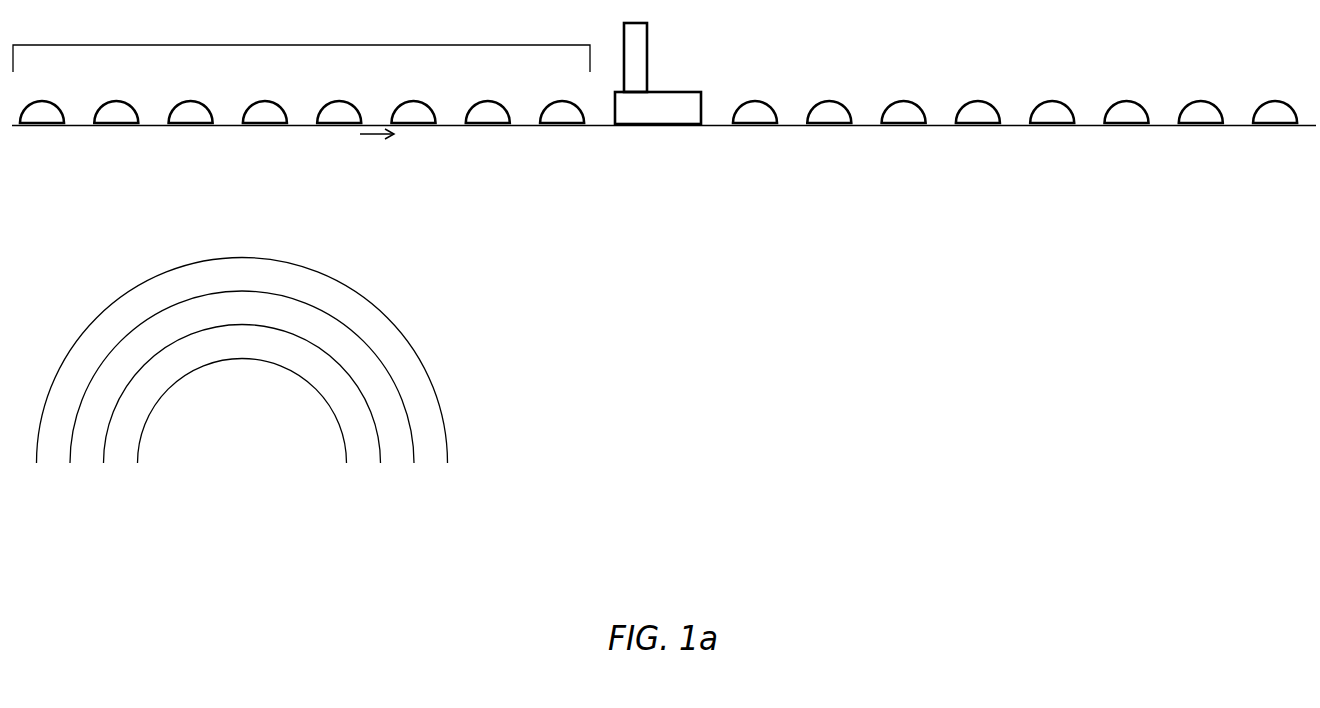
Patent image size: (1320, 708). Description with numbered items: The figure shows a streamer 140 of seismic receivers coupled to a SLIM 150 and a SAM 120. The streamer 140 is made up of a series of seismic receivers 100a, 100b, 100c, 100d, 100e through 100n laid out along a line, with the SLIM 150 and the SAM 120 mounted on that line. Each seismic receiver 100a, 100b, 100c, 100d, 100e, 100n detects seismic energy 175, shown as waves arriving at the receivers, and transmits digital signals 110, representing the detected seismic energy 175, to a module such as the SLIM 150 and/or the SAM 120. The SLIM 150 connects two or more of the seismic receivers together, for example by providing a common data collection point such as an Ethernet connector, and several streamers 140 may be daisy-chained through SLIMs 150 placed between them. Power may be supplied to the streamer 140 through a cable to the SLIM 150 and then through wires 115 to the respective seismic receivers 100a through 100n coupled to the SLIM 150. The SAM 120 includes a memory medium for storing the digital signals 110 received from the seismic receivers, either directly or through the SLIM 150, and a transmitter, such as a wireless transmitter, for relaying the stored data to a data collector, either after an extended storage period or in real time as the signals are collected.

The seismic receiver 100a is at (40, 100).
The seismic receiver 100b is at (107, 127).
The seismic receiver 100c is at (192, 125).
The seismic receiver 100d is at (260, 102).
The seismic receiver 100e is at (340, 102).
The seismic receiver 100n is at (557, 127).
The digital signals 110 is at (373, 137).
The wires 115 is at (373, 118).
The SAM 120 is at (643, 47).
The streamer 140 is at (289, 44).
The SLIM 150 is at (665, 124).
The seismic energy 175 is at (423, 311).